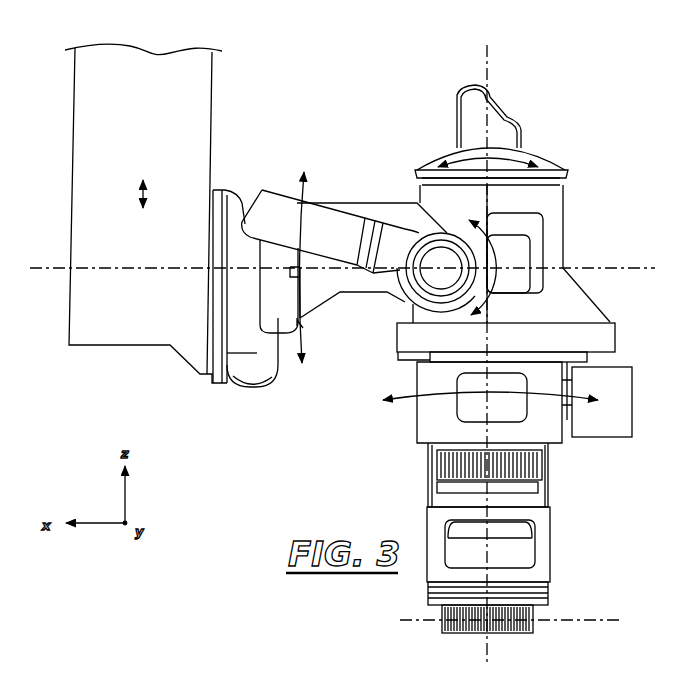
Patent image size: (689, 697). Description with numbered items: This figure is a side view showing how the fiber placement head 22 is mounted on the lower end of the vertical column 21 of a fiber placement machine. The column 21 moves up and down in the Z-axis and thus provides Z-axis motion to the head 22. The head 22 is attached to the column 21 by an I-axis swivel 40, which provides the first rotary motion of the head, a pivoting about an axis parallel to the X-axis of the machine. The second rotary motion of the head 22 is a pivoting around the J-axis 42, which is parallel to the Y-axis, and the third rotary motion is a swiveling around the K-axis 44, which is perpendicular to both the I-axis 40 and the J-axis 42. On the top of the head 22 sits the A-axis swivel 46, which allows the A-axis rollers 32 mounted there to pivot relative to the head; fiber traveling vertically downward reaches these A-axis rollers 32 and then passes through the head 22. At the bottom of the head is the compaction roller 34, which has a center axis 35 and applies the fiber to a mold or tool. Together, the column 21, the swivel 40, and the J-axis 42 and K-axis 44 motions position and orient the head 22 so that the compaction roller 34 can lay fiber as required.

The vertical column 21 is at (88, 229).
The head 22 is at (574, 306).
The A-axis rollers 32 is at (472, 95).
The compaction roller 34 is at (515, 628).
The center axis 35 is at (581, 618).
The I-axis swivel 40 is at (258, 304).
The J-axis 42 is at (446, 262).
The K-axis 44 is at (413, 350).
The A-axis swivel 46 is at (548, 163).